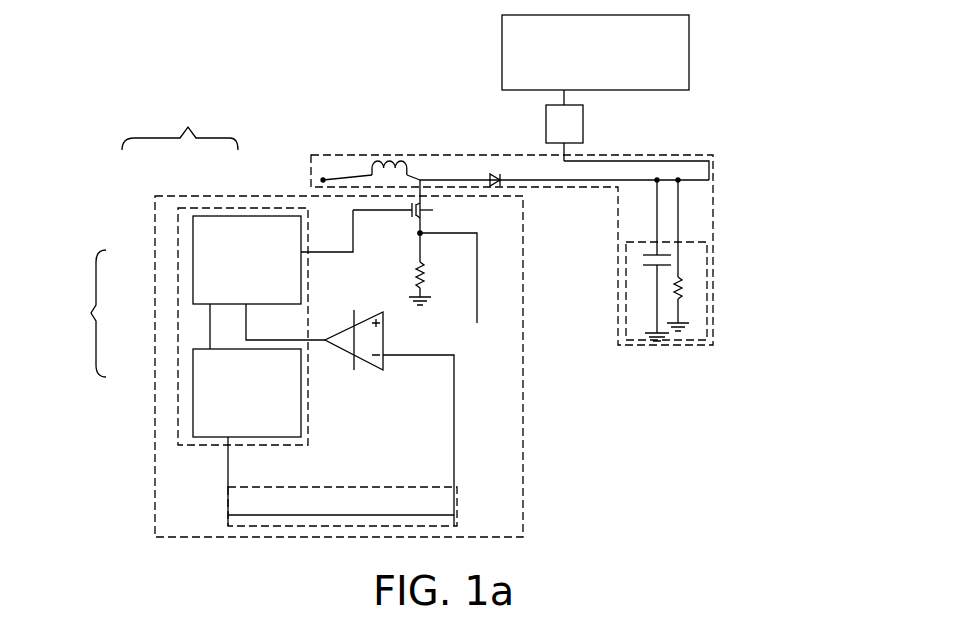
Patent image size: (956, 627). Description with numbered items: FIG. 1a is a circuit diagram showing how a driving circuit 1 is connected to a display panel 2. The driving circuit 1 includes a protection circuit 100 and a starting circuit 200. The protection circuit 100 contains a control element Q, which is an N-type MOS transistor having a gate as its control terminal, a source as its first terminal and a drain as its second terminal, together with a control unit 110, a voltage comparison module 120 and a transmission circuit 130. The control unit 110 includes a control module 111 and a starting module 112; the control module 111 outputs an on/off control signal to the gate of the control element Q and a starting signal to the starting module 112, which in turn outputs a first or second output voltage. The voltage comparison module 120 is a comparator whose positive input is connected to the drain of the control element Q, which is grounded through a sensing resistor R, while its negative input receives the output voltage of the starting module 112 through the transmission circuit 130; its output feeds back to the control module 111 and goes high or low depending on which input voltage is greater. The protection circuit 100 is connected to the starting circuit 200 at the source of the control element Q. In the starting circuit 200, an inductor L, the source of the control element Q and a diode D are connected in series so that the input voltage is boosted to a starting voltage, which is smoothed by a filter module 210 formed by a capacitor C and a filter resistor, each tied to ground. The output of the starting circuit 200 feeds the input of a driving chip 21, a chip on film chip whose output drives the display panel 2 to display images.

The driving circuit 1 is at (180, 130).
The display panel 2 is at (689, 52).
The driving chip 21 is at (578, 123).
The protection circuit 100 is at (155, 196).
The control unit 110 is at (182, 326).
The control module 111 is at (196, 263).
The starting module 112 is at (196, 383).
The voltage comparison module 120 is at (383, 340).
The transmission circuit 130 is at (228, 505).
The starting circuit 200 is at (310, 170).
The filter module 210 is at (707, 292).